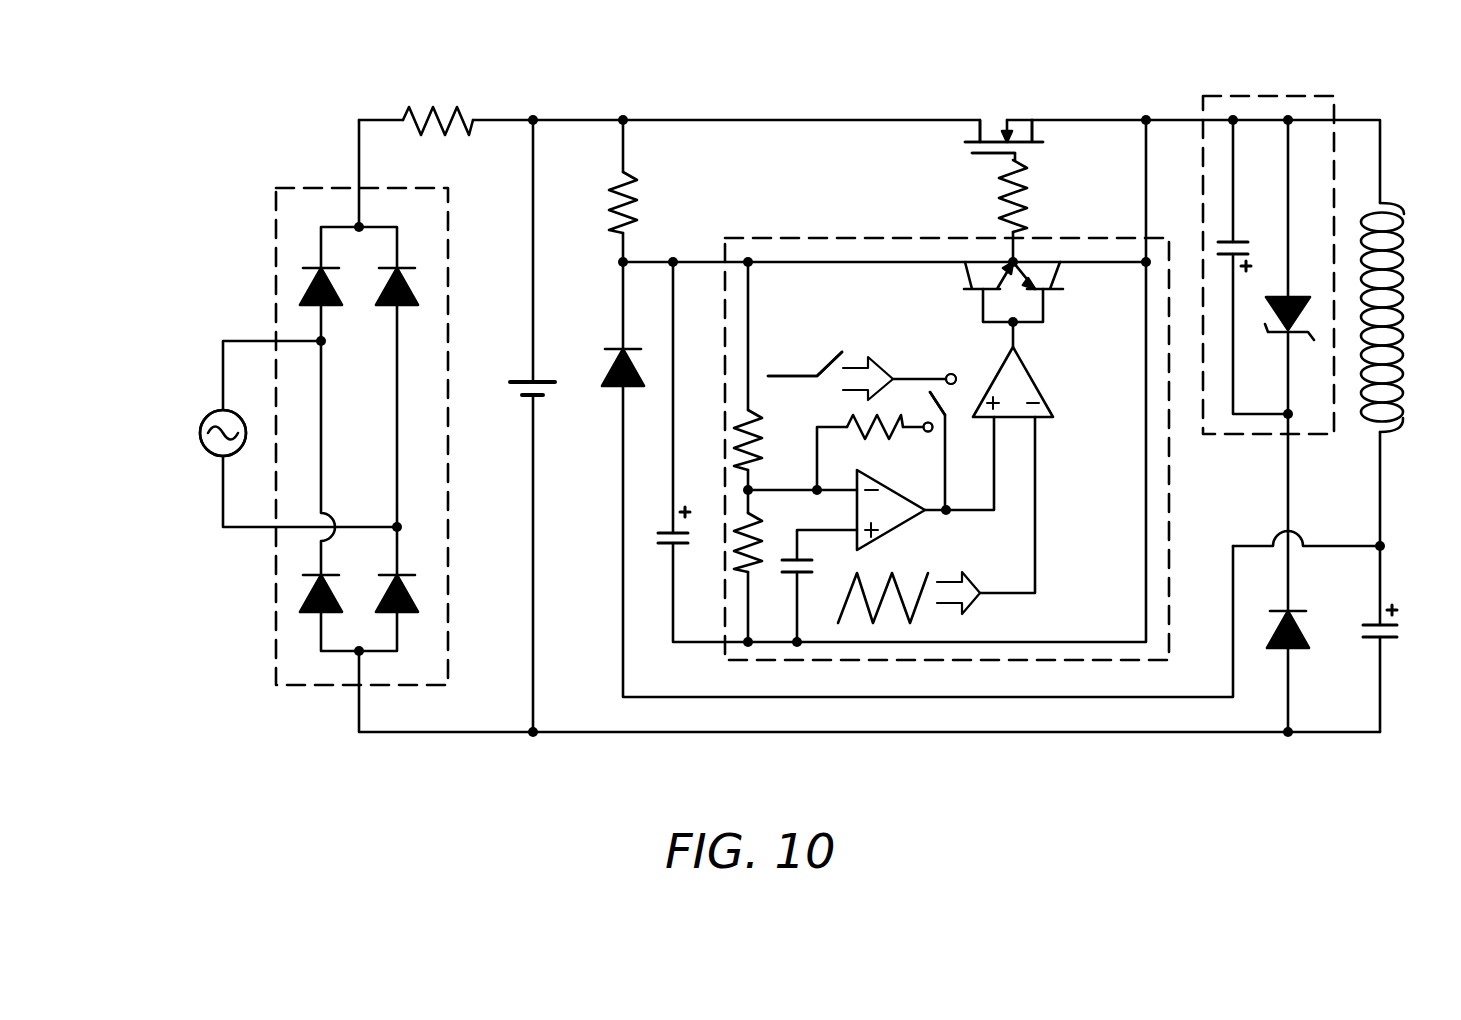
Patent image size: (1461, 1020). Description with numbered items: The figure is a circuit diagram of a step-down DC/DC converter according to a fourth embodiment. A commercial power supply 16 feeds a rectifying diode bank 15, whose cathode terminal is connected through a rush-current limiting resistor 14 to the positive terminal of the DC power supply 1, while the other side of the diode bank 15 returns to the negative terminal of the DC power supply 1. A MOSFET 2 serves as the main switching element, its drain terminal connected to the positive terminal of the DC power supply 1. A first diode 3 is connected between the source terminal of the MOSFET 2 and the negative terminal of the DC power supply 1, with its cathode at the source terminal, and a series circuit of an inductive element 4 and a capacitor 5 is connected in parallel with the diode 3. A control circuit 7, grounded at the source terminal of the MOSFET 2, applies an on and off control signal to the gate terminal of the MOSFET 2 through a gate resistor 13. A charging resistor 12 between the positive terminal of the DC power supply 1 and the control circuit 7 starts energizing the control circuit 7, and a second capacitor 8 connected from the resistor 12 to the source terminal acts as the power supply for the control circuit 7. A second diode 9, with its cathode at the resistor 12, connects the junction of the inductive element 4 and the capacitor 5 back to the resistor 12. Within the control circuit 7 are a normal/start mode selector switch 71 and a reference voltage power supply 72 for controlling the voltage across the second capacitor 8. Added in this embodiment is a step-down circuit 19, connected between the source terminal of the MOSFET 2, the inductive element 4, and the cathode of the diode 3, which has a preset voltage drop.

The DC power supply 1 is at (515, 393).
The MOSFET 2 is at (1016, 118).
The first diode 3 is at (1300, 638).
The inductive element 4 is at (1400, 210).
The capacitor 5 is at (1390, 640).
The control circuit 7 is at (793, 233).
The second capacitor 8 is at (667, 545).
The second diode 9 is at (616, 388).
The charging resistor 12 is at (618, 185).
The gate resistor 13 is at (1005, 200).
The rush-current limiting resistor 14 is at (463, 108).
The rectifying diode bank 15 is at (308, 685).
The commercial power supply 16 is at (210, 455).
The step-down circuit 19 is at (1272, 95).
The normal/start mode selector switch 71 is at (948, 405).
The reference voltage power supply 72 is at (782, 558).